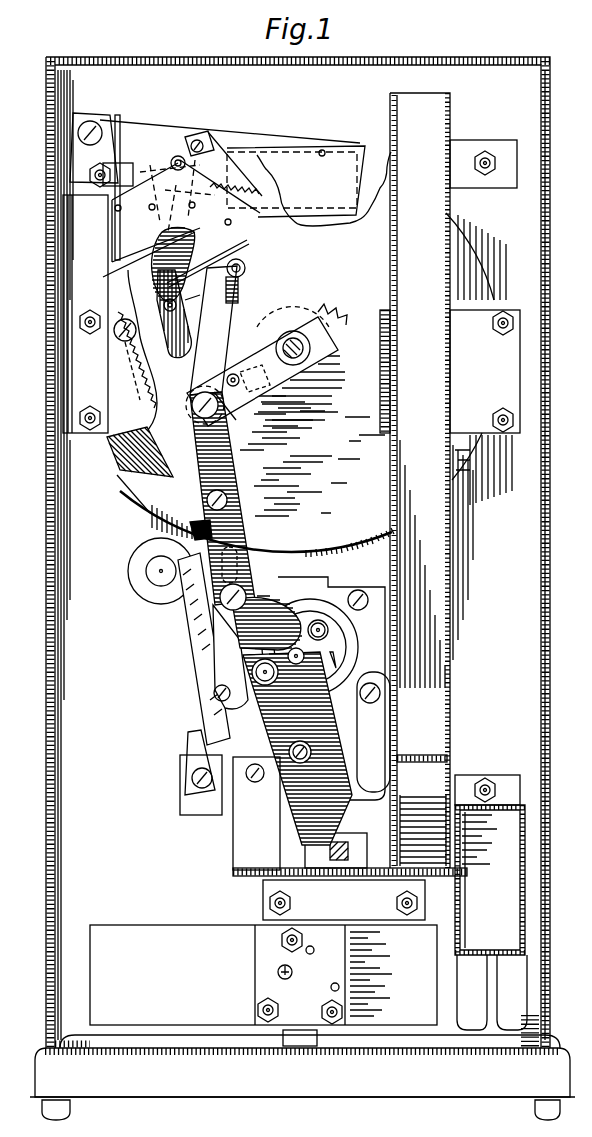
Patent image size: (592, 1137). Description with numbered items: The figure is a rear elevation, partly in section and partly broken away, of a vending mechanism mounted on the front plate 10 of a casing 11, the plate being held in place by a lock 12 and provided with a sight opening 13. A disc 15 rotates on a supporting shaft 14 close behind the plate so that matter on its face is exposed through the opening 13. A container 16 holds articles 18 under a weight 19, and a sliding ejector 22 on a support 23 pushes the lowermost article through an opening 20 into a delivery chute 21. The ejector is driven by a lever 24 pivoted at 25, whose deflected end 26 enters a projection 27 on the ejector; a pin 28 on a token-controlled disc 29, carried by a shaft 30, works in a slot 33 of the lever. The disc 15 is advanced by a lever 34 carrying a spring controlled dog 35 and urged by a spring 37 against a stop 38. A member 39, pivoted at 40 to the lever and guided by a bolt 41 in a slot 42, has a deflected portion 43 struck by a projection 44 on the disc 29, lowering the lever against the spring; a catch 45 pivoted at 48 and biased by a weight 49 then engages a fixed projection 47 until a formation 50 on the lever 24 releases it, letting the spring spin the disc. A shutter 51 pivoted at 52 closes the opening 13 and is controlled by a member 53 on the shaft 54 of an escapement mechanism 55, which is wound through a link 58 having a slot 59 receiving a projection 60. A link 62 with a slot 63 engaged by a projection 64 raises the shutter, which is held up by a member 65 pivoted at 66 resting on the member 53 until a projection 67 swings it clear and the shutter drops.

The front plate 10 is at (527, 113).
The casing 11 is at (545, 500).
The lock 12 is at (265, 984).
The sight opening 13 is at (323, 152).
The supporting shaft 14 is at (307, 330).
The disc 15 is at (150, 505).
The container 16 is at (447, 548).
The articles 18 is at (438, 795).
The weight 19 is at (447, 752).
The opening 20 is at (491, 902).
The delivery chute 21 is at (519, 914).
The sliding ejector 22 is at (378, 859).
The support 23 is at (350, 880).
The lever 24 is at (335, 768).
The pivot 25 is at (305, 752).
The deflected end 26 is at (335, 862).
The projection 27 is at (333, 840).
The pin or projection 28 is at (267, 684).
The disc 29 is at (336, 633).
The shaft 30 is at (346, 695).
The slot 33 is at (293, 702).
The lever 34 is at (236, 420).
The spring controlled dog 35 is at (275, 322).
The spring 37 is at (120, 376).
The stop 38 is at (96, 436).
The member 39 is at (240, 516).
The pivot 40 is at (197, 410).
The fastening device or bolt 41 is at (238, 588).
The slot 42 is at (230, 550).
The deflected portion 43 is at (276, 630).
The projection 44 is at (319, 622).
The catch 45 is at (200, 640).
The projection 47 is at (222, 666).
The pivot 48 is at (223, 498).
The weight 49 is at (146, 584).
The projection or formation 50 is at (230, 799).
The shutter 51 is at (270, 150).
The pivot 52 is at (92, 130).
The member 53 is at (195, 305).
The shaft 54 is at (182, 305).
The escapement mechanism 55 is at (112, 222).
The link 58 is at (232, 330).
The slot 59 is at (242, 290).
The projection or extension 60 is at (246, 268).
The link 62 is at (118, 266).
The slot 63 is at (165, 350).
The projection 64 is at (132, 312).
The member 65 is at (196, 240).
The pivot 66 is at (197, 149).
The projection 67 is at (200, 257).